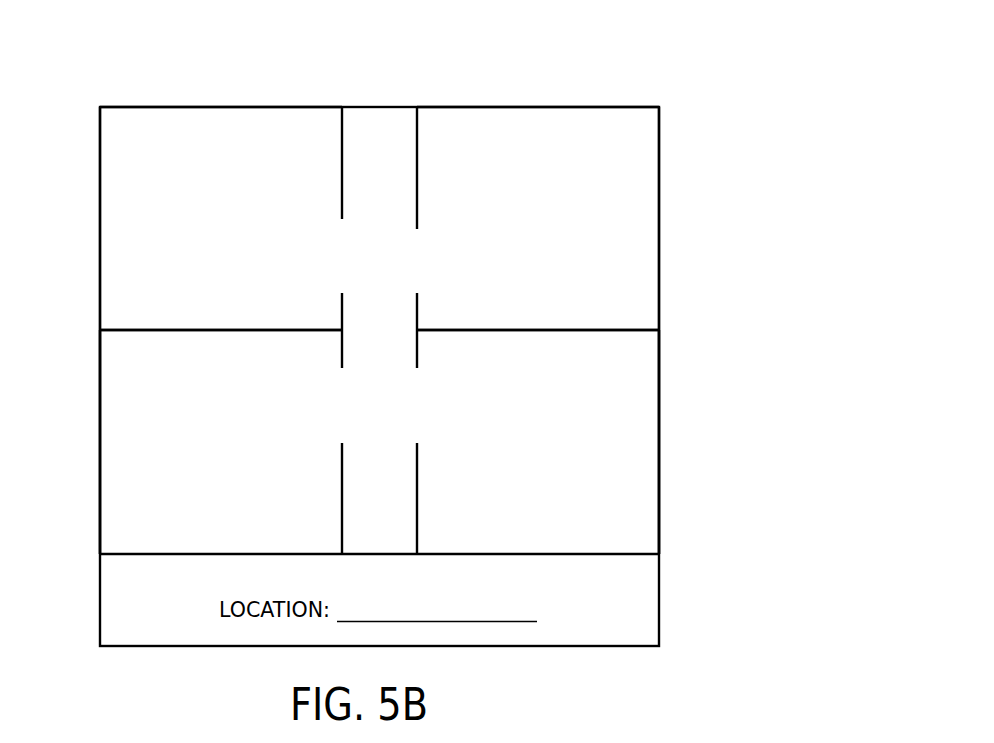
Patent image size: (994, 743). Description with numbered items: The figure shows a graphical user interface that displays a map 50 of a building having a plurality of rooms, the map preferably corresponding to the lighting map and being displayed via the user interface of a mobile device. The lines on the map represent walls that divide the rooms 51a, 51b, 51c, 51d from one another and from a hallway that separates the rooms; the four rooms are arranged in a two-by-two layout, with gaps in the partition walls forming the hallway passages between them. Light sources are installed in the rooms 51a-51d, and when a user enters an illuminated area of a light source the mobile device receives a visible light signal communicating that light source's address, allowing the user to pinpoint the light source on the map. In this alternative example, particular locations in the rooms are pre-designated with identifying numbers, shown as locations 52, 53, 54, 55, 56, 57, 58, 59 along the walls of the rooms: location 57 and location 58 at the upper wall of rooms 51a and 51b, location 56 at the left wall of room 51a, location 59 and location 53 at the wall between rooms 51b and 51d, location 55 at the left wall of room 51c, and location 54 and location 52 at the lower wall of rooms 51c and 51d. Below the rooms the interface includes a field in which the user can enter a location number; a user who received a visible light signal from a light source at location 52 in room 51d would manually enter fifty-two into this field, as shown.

The floor plan of building 50 is at (643, 67).
The room 51a is at (221, 218).
The room 51b is at (538, 218).
The room 51c is at (221, 442).
The room 51d is at (538, 442).
The location 52 is at (464, 553).
The location 53 is at (583, 332).
The location 54 is at (149, 553).
The location 55 is at (105, 353).
The location 56 is at (100, 202).
The location 57 is at (253, 108).
The location 58 is at (527, 108).
The location 59 is at (451, 326).